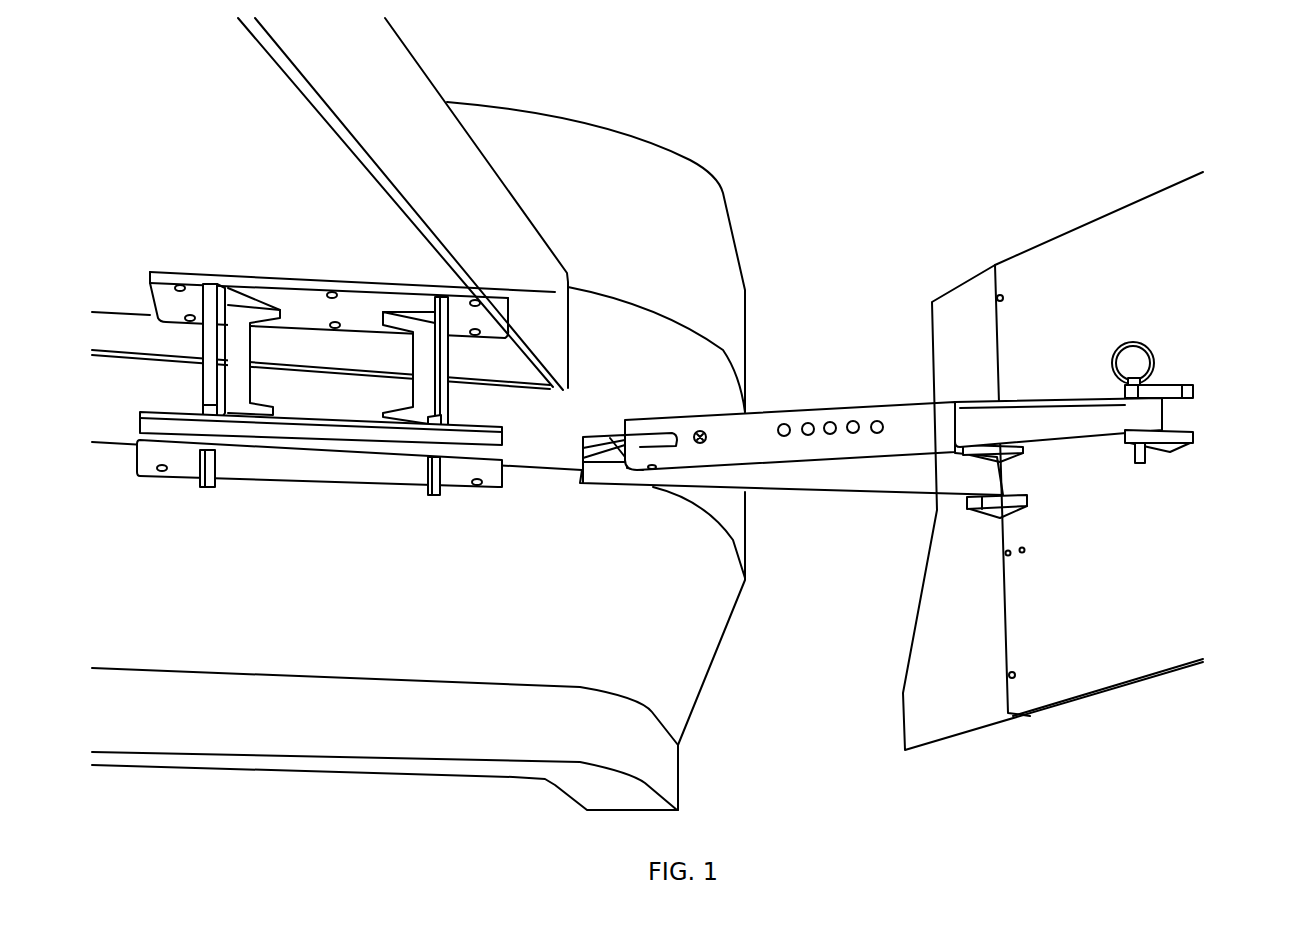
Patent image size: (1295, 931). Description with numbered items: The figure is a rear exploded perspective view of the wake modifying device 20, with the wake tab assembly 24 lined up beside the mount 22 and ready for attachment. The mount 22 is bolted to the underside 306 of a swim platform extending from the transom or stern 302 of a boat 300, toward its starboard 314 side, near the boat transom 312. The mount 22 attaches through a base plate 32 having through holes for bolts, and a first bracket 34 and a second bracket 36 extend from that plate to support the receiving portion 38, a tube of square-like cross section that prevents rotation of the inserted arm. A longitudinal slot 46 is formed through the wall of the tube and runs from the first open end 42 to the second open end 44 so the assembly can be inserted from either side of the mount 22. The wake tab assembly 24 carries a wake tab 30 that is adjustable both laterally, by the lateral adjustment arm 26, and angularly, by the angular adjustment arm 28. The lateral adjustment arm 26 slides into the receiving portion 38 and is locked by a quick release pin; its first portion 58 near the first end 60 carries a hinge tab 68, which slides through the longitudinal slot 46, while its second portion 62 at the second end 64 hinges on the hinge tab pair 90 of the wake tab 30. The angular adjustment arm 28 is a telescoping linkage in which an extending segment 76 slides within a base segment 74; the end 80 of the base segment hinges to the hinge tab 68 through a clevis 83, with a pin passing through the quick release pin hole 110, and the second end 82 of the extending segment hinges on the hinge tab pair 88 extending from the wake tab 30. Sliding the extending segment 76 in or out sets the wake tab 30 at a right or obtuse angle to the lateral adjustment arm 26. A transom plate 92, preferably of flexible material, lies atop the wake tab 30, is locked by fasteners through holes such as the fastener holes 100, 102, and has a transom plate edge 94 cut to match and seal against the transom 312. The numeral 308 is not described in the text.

The wake modifying device 20 is at (1056, 124).
The mount 22 is at (292, 481).
The wake tab assembly 24 is at (790, 383).
The lateral adjustment arm 26 is at (834, 501).
The angular adjustment arm 28 is at (850, 376).
The wake tab 30 is at (1019, 461).
The base plate 32 is at (316, 288).
The first bracket 34 is at (212, 385).
The second bracket 36 is at (438, 393).
The receiving portion 38 is at (350, 473).
The first open end 42 is at (503, 473).
The second open end 44 is at (133, 457).
The longitudinal slot 46 is at (268, 443).
The first portion 58 is at (571, 468).
The first end 60 is at (578, 472).
The second portion 62 is at (920, 522).
The second end 64 is at (1005, 476).
The hinge tab 68 is at (603, 450).
The base segment 74 is at (800, 372).
The extending segment 76 is at (1067, 402).
The end of the base segment 80 is at (625, 430).
The second end of the extending segment 82 is at (1187, 402).
The clevis 83 is at (685, 428).
The hinge tab pair 88 is at (1192, 390).
The hinge tab pair 90 is at (1015, 505).
The transom plate 92 is at (960, 675).
The transom plate edge 94 is at (912, 622).
The fastener hole 100 is at (1005, 298).
The fastener hole 102 is at (1017, 675).
The quick release pin hole 110 is at (650, 472).
The boat 300 is at (595, 381).
The transom or stern 302 is at (522, 130).
The underside 306 is at (205, 166).
The frame rail 308 is at (420, 143).
The transom 312 is at (320, 640).
The starboard side 314 is at (748, 322).